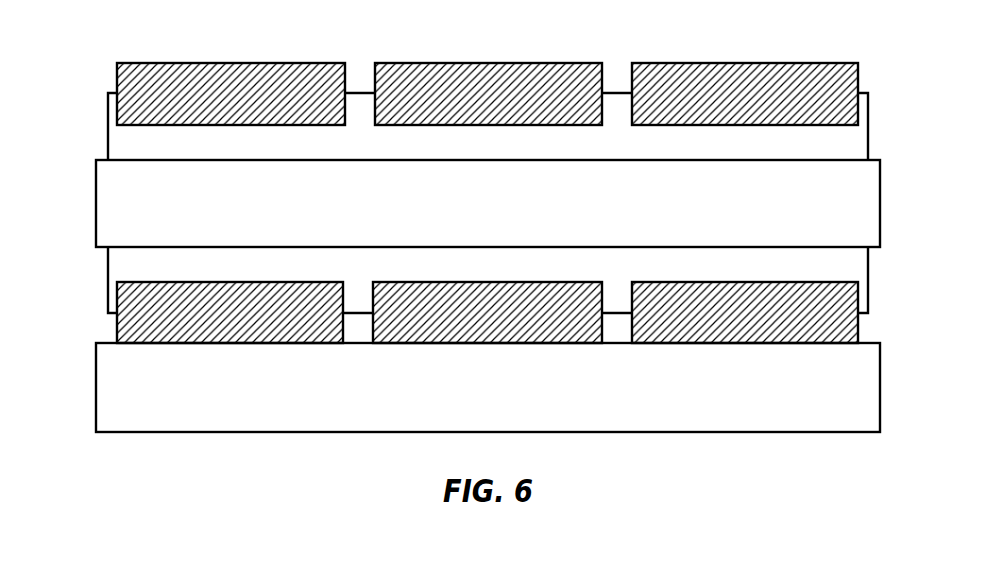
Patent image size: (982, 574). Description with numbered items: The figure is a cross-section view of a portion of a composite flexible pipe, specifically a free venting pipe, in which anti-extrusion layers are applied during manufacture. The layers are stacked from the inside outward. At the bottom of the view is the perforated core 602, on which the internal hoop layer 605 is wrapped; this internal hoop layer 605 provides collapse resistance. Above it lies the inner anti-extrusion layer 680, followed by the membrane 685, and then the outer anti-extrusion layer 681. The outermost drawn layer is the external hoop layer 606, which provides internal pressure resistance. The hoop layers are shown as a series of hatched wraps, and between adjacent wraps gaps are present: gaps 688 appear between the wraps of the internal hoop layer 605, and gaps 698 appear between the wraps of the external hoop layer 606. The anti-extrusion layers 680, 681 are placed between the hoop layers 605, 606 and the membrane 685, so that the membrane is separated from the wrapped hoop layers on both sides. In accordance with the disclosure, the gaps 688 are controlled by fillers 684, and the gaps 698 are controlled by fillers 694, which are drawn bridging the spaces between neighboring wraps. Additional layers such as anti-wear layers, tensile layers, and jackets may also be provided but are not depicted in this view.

The perforated core 602 is at (855, 388).
The internal hoop layer 605 is at (140, 322).
The external hoop layer 606 is at (182, 62).
The inner anti-extrusion layer 680 is at (840, 147).
The outer anti-extrusion layer 681 is at (842, 268).
The membrane 685 is at (855, 210).
The filler 684 is at (362, 290).
The gap 688 is at (353, 332).
The filler 694 is at (362, 115).
The gap 698 is at (353, 73).